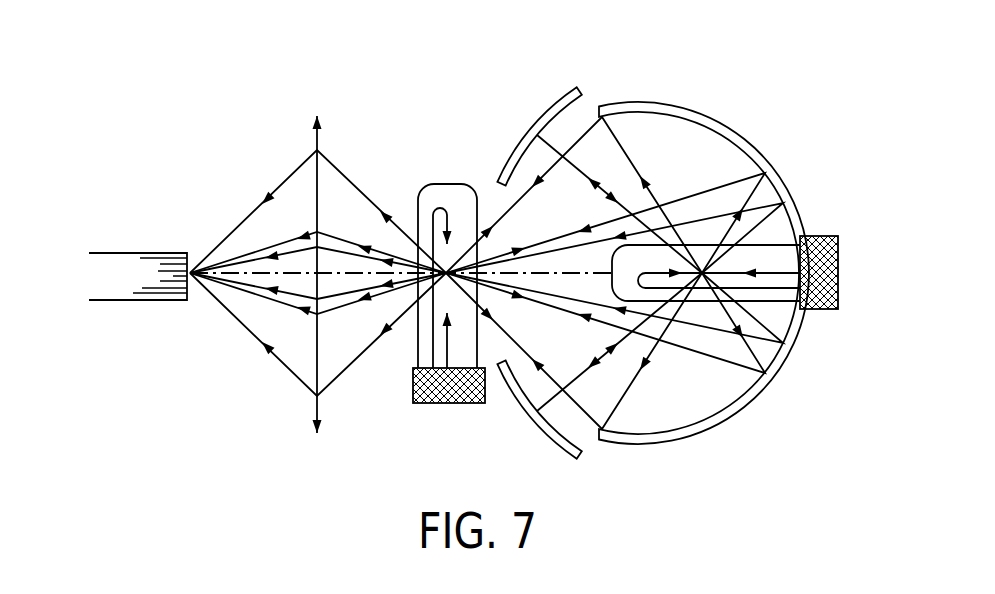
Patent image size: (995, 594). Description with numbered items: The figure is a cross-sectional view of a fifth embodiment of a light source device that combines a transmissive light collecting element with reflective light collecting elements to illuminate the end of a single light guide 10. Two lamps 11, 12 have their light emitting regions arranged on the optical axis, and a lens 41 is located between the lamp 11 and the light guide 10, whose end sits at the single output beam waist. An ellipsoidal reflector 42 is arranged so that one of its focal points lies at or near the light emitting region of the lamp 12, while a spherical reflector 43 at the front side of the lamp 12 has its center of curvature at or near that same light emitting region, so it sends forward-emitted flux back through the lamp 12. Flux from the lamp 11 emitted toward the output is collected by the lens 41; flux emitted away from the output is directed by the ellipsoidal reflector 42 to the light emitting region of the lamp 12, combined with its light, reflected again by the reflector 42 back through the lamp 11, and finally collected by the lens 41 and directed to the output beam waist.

The light guide 10 is at (125, 263).
The lens 41 is at (320, 143).
The lamp 11 is at (443, 187).
The spherical reflector 43 is at (548, 110).
The ellipsoidal reflector 42 is at (706, 120).
The lamp 12 is at (780, 255).